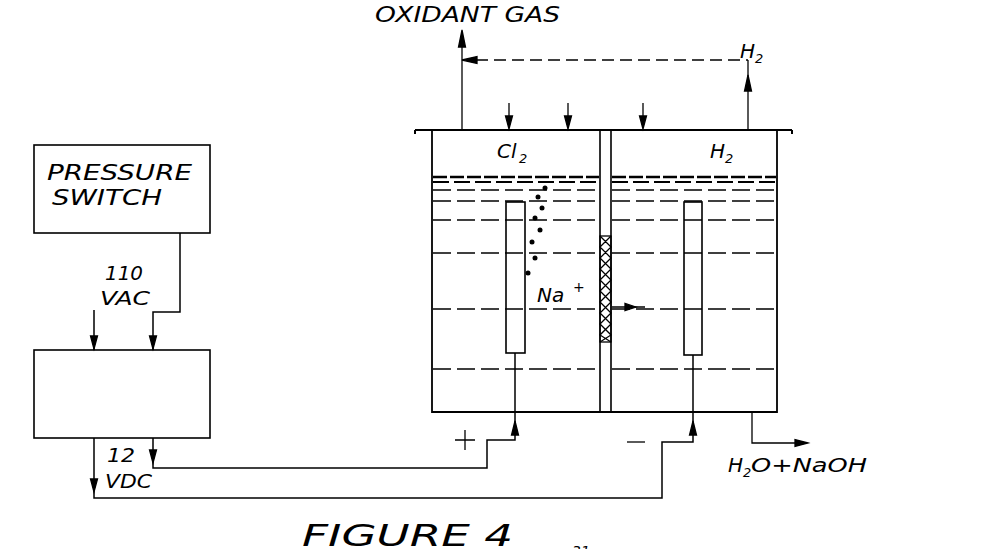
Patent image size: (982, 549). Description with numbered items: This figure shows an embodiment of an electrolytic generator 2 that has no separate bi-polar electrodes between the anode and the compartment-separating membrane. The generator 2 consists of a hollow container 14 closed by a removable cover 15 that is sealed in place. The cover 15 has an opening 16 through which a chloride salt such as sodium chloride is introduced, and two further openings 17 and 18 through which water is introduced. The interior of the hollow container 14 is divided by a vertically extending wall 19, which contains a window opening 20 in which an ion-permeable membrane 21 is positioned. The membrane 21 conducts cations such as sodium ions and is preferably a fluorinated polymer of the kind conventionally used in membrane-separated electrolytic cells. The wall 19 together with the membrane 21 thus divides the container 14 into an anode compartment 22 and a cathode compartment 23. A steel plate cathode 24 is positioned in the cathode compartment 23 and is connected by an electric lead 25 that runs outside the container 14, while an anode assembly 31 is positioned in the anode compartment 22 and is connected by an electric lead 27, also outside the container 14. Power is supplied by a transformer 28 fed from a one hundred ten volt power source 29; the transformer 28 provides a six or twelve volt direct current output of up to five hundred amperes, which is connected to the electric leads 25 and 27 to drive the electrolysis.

The electrolytic generator 2 is at (413, 318).
The hollow container 14 is at (432, 237).
The removable cover 15 is at (432, 128).
The opening 16 is at (508, 127).
The opening 17 is at (566, 127).
The opening 18 is at (641, 127).
The vertically extending wall 19 is at (611, 156).
The window opening 20 is at (611, 330).
The ion-permeable membrane 21 is at (600, 323).
The anode compartment 22 is at (443, 390).
The cathode compartment 23 is at (767, 343).
The steel plate cathode 24 is at (702, 282).
The electric lead 25 is at (675, 444).
The electric lead 27 is at (517, 426).
The transformer 28 is at (210, 415).
The power source 29 is at (177, 312).
The anode assembly 31 is at (506, 283).